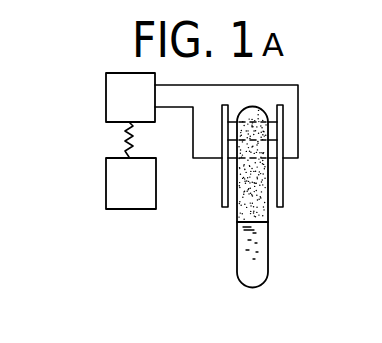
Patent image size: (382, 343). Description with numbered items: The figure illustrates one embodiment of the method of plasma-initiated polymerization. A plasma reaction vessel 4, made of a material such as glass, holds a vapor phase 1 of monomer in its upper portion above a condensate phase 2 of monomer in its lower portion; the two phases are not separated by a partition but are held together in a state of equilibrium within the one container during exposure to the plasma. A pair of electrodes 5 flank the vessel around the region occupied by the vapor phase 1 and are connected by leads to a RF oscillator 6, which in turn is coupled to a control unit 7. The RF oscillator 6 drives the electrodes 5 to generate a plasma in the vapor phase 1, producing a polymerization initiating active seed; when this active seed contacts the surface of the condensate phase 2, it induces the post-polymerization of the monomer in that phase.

The vapor phase 1 is at (259, 213).
The condensate phase 2 is at (258, 265).
The plasma reaction vessel 4 is at (237, 257).
The electrode 5 is at (228, 187).
The RF oscillator 6 is at (115, 100).
The control unit 7 is at (112, 186).